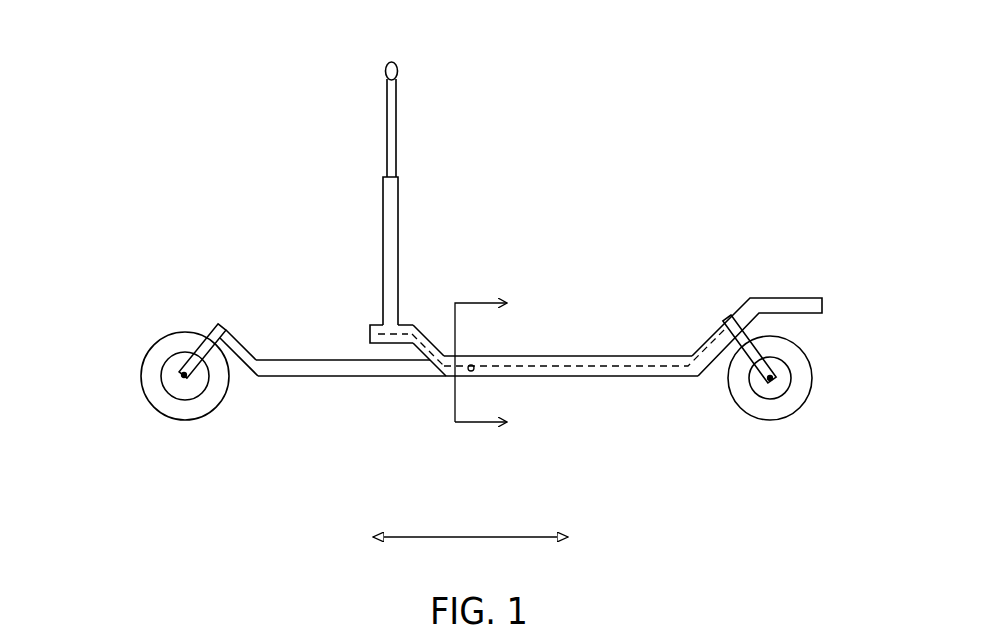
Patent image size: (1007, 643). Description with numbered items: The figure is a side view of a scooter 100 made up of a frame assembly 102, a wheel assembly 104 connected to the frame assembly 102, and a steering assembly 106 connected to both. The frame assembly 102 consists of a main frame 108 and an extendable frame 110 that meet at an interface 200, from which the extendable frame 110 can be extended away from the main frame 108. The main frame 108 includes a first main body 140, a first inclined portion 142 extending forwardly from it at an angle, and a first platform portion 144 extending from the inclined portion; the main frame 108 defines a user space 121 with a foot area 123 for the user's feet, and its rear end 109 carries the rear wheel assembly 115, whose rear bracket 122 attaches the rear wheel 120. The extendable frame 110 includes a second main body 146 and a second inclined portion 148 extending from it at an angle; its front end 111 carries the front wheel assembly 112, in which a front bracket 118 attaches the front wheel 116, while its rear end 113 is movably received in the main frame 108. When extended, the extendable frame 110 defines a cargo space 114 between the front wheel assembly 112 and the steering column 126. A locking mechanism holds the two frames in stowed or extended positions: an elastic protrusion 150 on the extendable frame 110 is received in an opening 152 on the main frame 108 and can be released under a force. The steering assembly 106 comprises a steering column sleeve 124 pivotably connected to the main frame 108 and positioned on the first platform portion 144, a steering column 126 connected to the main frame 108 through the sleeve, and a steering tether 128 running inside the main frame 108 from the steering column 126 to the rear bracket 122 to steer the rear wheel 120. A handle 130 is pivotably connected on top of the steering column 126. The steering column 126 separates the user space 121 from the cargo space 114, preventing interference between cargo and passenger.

The scooter 100 is at (704, 69).
The frame assembly 102 is at (410, 388).
The wheel assembly 104 is at (180, 438).
The steering assembly 106 is at (320, 168).
The main frame 108 is at (605, 377).
The rear end 109 is at (735, 317).
The extendable frame 110 is at (295, 378).
The front end 111 is at (242, 324).
The front wheel assembly 112 is at (212, 322).
The rear end 113 is at (397, 378).
The cargo space 114 is at (300, 350).
The rear wheel assembly 115 is at (812, 365).
The front wheel 116 is at (141, 378).
The front bracket 118 is at (207, 340).
The rear wheel 120 is at (813, 378).
The user space 121 is at (560, 335).
The rear bracket 122 is at (733, 343).
The foot area 123 is at (590, 356).
The steering column sleeve 124 is at (399, 200).
The steering column 126 is at (397, 125).
The steering tether 128 is at (676, 366).
The handle 130 is at (398, 66).
The first main body 140 is at (555, 377).
The first inclined portion 142 is at (431, 343).
The first platform portion 144 is at (370, 326).
The second main body 146 is at (362, 370).
The second inclined portion 148 is at (240, 366).
The protrusion 150 is at (343, 369).
The opening 152 is at (474, 371).
The interface 200 is at (427, 380).